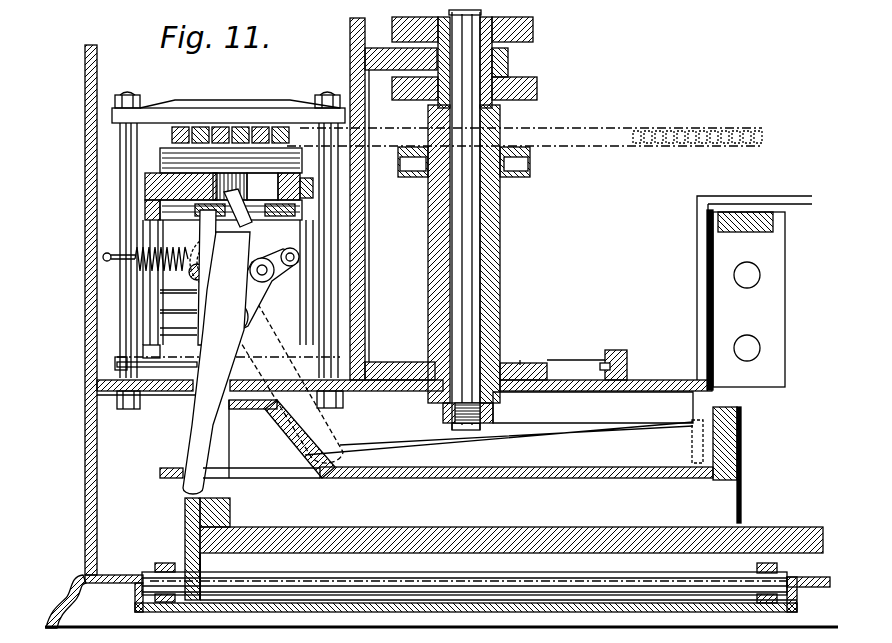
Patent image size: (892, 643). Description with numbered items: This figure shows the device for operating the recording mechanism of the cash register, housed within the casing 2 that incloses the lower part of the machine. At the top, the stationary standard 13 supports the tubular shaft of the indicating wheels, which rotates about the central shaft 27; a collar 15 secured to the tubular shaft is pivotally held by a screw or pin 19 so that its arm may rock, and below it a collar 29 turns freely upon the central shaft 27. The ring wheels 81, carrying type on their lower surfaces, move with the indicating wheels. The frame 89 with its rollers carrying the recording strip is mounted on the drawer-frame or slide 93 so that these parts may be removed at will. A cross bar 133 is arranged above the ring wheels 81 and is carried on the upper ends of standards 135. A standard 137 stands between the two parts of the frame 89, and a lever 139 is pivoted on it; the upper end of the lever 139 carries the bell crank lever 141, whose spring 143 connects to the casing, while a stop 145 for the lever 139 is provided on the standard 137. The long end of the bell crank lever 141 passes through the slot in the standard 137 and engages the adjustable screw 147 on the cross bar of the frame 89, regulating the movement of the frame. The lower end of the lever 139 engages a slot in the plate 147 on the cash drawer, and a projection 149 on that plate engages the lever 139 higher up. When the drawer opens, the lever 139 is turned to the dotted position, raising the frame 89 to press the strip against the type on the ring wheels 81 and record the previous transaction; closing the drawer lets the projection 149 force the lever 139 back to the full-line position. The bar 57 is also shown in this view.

The casing 2 is at (88, 332).
The stationary standard 13 is at (350, 70).
The collar 15 is at (533, 38).
The screw or pin 19 is at (503, 71).
The central shaft 27 is at (440, 211).
The collar 29 is at (500, 276).
The base bar 57 is at (398, 527).
The ring wheels 81 is at (175, 134).
The frame 89 is at (210, 151).
The drawer-frame or slide 93 is at (544, 362).
The cross bar 133 is at (208, 107).
The standards 135 is at (124, 152).
The standard 137 is at (216, 277).
The lever 139 is at (200, 407).
The bell crank lever 141 is at (243, 234).
The spring 143 is at (196, 280).
The stop 145 is at (156, 338).
The screw 147 is at (240, 182).
The projection 149 is at (290, 428).